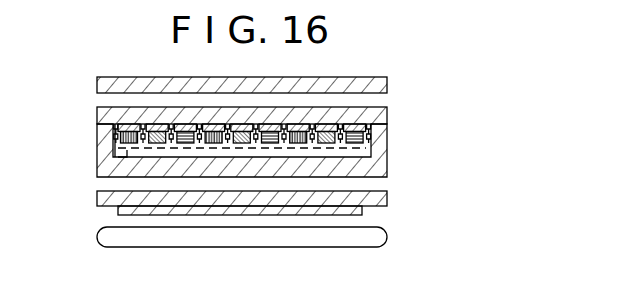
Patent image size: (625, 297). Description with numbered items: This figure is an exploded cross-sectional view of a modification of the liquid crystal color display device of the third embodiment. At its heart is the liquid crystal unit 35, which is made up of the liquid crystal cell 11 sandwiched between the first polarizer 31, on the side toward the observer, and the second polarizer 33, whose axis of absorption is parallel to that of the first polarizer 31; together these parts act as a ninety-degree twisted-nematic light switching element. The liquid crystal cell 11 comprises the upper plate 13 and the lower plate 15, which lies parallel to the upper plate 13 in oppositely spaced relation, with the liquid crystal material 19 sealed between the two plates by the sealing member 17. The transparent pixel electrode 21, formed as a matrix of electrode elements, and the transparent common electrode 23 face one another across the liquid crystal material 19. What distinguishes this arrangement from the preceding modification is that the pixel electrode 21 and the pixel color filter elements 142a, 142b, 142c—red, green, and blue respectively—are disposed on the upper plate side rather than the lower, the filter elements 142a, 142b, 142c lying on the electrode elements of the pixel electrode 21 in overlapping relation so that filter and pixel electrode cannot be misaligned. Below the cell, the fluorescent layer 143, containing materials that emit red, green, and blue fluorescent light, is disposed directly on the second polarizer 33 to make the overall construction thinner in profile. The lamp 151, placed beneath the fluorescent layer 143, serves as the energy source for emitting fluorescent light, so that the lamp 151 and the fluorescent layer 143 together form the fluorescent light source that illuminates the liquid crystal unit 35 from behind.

The liquid crystal cell 11 is at (254, 151).
The upper plate 13 is at (389, 114).
The lower plate 15 is at (389, 170).
The sealing member 17 is at (100, 124).
The liquid crystal material 19 is at (232, 151).
The transparent pixel electrode 21 is at (125, 127).
The transparent common electrode 23 is at (127, 160).
The first polarizer 31 is at (388, 87).
The second polarizer 33 is at (388, 203).
The liquid crystal unit 35 is at (276, 155).
The pixel color filter element 142a is at (116, 137).
The pixel color filter element 142b is at (116, 148).
The pixel color filter element 142c is at (175, 148).
The fluorescent layer 143 is at (362, 214).
The lamp 151 is at (385, 242).